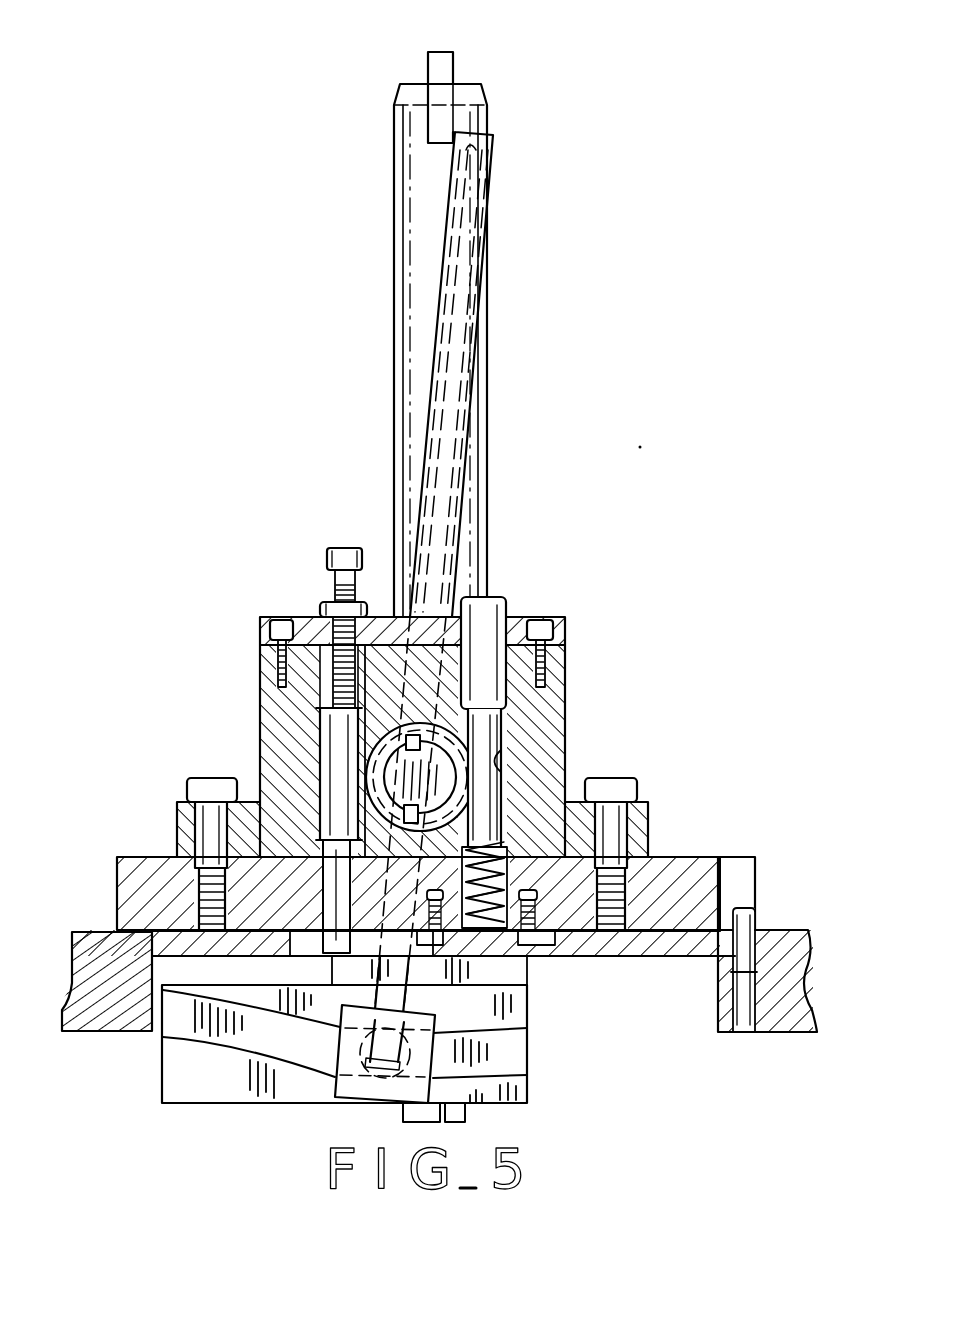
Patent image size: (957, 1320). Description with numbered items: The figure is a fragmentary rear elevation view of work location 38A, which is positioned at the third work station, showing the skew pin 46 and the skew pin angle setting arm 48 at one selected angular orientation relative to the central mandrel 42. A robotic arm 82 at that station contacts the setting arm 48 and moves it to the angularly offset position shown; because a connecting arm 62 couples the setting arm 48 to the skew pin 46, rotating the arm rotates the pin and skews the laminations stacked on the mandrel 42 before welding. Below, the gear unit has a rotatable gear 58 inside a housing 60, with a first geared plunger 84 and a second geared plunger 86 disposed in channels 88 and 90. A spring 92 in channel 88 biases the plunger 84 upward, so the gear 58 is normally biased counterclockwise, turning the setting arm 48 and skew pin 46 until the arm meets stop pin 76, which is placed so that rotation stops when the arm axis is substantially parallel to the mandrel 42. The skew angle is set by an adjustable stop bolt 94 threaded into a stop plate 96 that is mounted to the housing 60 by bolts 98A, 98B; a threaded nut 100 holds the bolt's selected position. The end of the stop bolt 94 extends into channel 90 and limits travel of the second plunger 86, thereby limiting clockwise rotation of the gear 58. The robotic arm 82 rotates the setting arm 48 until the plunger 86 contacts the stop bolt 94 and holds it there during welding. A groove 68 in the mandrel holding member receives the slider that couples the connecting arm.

The arm 82 is at (427, 70).
The mandrel 42 is at (393, 135).
The skew pin angle setting arm 48 is at (452, 154).
The skew pin 46 is at (457, 225).
The adjustable skew angle stop bolt 94 is at (343, 547).
The threaded nut 100 is at (380, 613).
The stop plate 96 is at (308, 612).
The bolt 98A is at (280, 617).
The bolt 98B is at (543, 617).
The work location 38A is at (658, 675).
The channel 90 is at (317, 713).
The housing 60 is at (252, 711).
The second geared plunger 86 is at (318, 770).
The first geared plunger 84 is at (502, 742).
The channel 88 is at (503, 737).
The gear 58 is at (448, 820).
The stop pin 76 is at (345, 943).
The spring 92 is at (528, 958).
The groove 68 is at (505, 1078).
The connecting arm 62 is at (336, 1085).